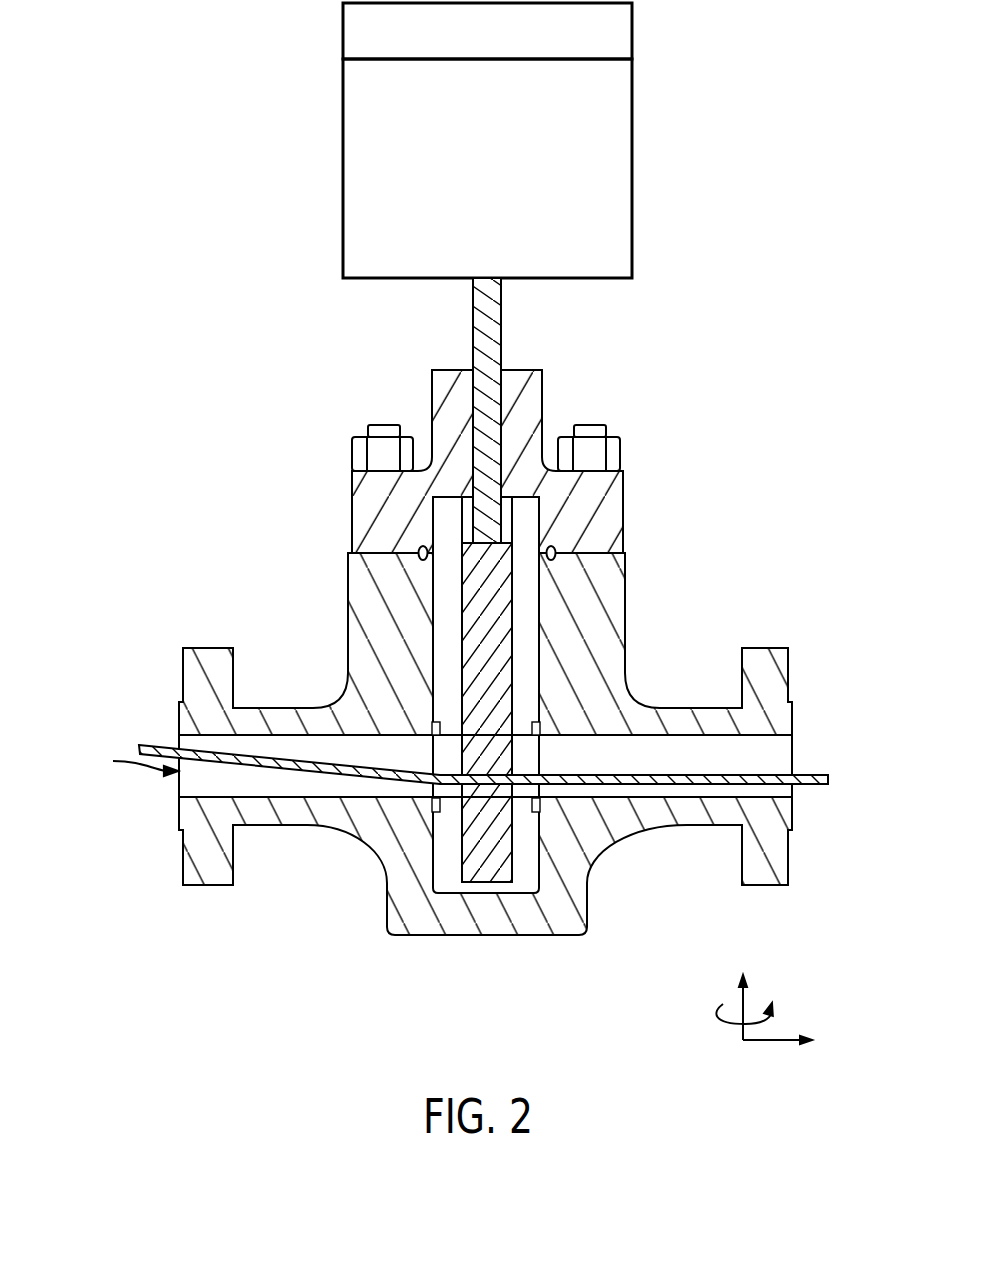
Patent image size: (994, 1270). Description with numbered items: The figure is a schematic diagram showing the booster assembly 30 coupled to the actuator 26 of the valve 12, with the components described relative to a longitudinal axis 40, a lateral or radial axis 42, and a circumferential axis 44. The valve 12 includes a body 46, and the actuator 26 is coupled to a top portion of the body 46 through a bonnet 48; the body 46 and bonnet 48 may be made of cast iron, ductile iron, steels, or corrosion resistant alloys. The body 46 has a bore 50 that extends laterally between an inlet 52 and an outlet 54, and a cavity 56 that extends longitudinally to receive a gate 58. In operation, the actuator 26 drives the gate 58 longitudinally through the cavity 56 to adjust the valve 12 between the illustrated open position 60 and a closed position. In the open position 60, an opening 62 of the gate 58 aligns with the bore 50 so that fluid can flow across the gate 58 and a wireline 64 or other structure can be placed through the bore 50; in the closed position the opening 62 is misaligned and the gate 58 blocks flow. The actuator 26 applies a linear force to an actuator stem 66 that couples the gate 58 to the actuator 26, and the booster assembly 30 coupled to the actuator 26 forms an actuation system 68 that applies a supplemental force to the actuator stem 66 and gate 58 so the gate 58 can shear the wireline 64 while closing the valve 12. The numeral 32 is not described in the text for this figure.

The valve 12 is at (722, 370).
The actuator 26 is at (632, 87).
The booster assembly 30 is at (632, 33).
The flow passage 32 is at (323, 757).
The longitudinal axis 40 is at (742, 1002).
The lateral axis 42 is at (771, 1042).
The circumferential axis 44 is at (729, 1024).
The body 46 is at (625, 632).
The bonnet 48 is at (587, 483).
The bore 50 is at (131, 762).
The inlet 52 is at (175, 786).
The outlet 54 is at (794, 757).
The cavity 56 is at (515, 512).
The gate 58 is at (526, 590).
The open position 60 is at (728, 398).
The opening 62 is at (540, 756).
The wireline 64 is at (806, 780).
The actuator stem 66 is at (501, 330).
The actuation system 68 is at (722, 78).